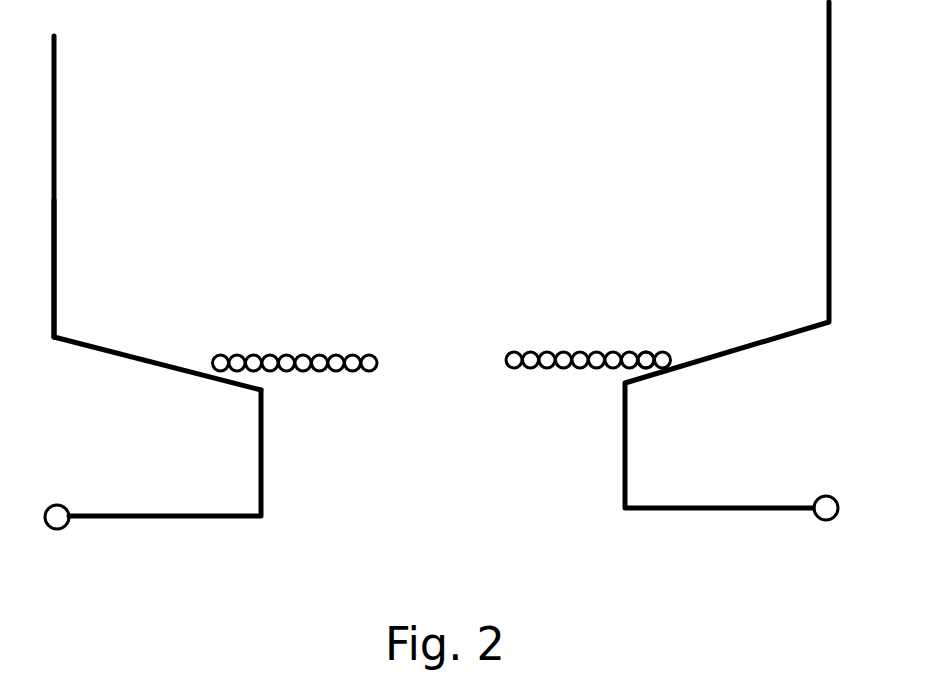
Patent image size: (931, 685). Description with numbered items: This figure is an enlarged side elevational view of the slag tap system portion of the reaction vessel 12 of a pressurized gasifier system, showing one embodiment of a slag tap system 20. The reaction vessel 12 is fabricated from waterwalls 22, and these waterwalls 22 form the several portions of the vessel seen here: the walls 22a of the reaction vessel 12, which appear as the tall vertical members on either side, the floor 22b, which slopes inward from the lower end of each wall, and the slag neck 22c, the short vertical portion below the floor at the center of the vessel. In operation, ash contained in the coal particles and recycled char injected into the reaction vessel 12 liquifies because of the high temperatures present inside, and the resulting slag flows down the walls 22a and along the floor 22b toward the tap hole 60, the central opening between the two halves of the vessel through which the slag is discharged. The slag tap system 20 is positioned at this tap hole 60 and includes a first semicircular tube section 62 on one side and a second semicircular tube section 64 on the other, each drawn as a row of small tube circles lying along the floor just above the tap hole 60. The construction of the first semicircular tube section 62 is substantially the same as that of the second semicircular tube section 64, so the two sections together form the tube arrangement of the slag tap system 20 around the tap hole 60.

The reaction vessel 12 is at (830, 86).
The waterwalls 22 is at (57, 85).
The walls of the reaction vessel 22a is at (57, 270).
The floor of the reaction vessel 22b is at (112, 348).
The slag neck 22c is at (264, 448).
The slag tap system 20 is at (547, 353).
The first semicircular tube section 62 is at (289, 356).
The second semicircular tube section 64 is at (645, 352).
The tap hole 60 is at (424, 383).